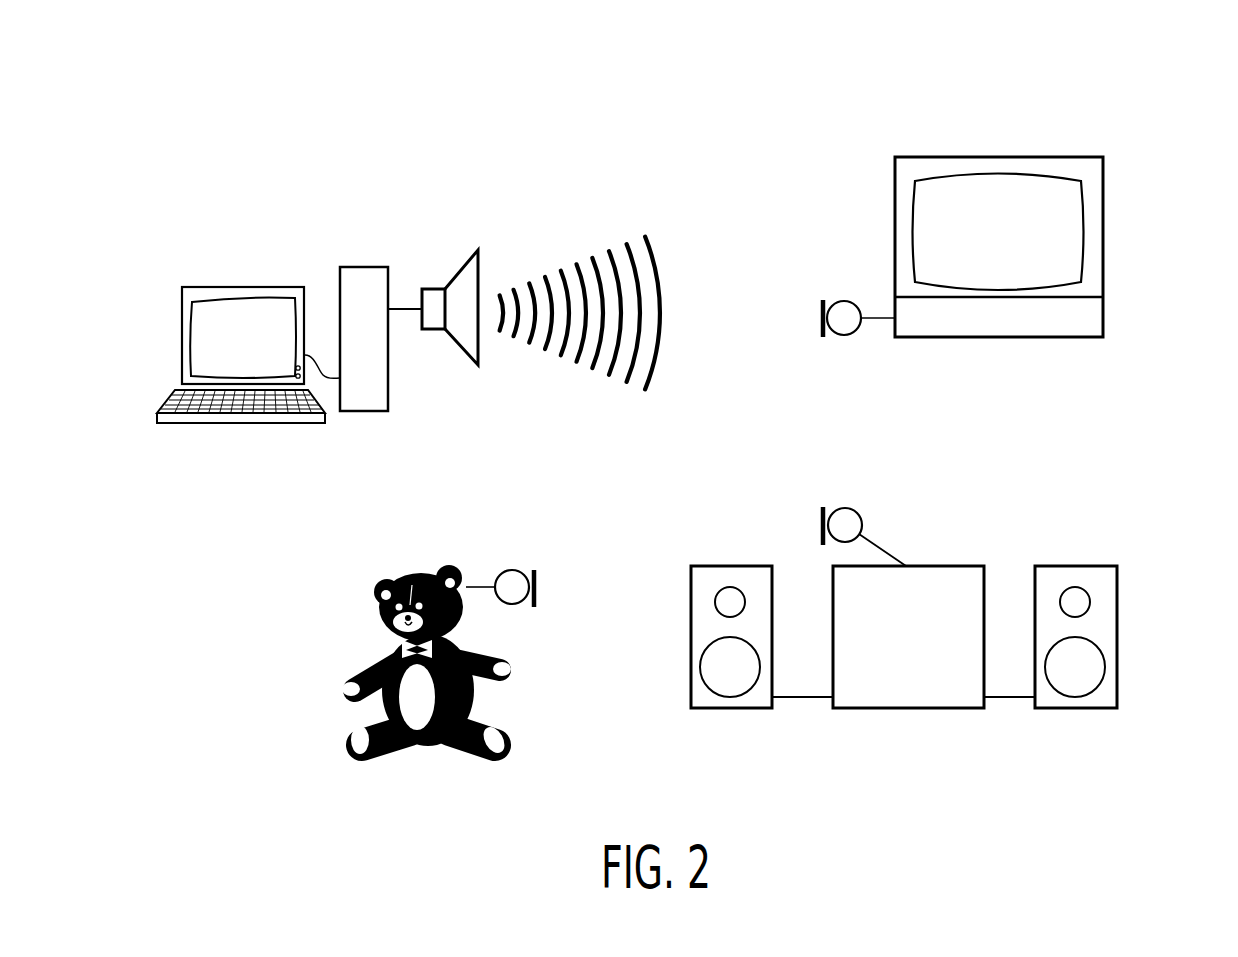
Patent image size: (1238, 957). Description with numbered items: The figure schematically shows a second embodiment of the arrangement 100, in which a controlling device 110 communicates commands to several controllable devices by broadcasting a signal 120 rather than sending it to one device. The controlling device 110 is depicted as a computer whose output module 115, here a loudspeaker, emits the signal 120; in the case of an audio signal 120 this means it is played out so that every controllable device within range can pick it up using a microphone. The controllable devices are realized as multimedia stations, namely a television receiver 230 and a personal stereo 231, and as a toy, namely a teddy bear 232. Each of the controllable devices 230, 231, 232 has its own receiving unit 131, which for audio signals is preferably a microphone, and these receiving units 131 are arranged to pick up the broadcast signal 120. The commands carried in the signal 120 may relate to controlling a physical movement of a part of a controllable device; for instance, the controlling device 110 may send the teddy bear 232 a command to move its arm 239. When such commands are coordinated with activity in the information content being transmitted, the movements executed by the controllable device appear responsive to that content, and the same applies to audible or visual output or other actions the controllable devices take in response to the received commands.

The arrangement 100 is at (726, 130).
The controlling device 110 is at (247, 287).
The output module 115 is at (465, 280).
The signal 120 is at (653, 378).
The receiving unit 131 is at (845, 303).
The television receiver 230 is at (1103, 281).
The personal stereo 231 is at (950, 565).
The teddy bear 232 is at (510, 722).
The arm 239 is at (366, 671).